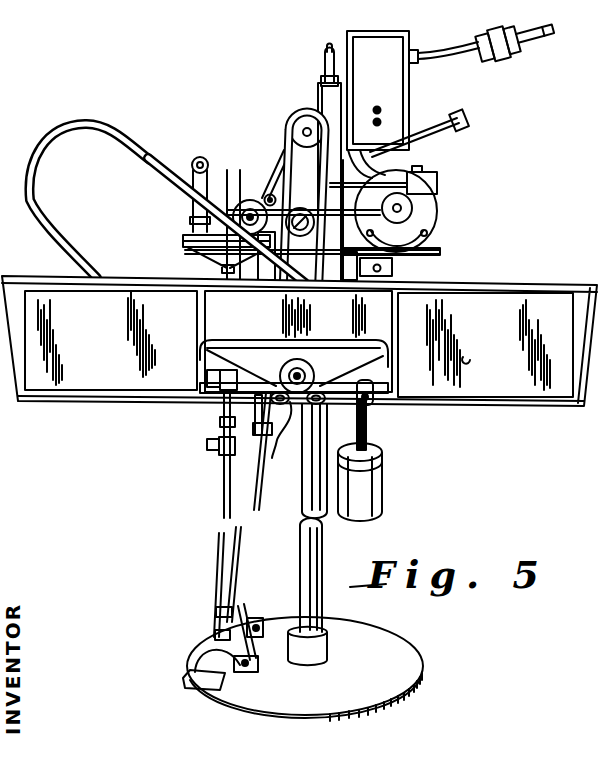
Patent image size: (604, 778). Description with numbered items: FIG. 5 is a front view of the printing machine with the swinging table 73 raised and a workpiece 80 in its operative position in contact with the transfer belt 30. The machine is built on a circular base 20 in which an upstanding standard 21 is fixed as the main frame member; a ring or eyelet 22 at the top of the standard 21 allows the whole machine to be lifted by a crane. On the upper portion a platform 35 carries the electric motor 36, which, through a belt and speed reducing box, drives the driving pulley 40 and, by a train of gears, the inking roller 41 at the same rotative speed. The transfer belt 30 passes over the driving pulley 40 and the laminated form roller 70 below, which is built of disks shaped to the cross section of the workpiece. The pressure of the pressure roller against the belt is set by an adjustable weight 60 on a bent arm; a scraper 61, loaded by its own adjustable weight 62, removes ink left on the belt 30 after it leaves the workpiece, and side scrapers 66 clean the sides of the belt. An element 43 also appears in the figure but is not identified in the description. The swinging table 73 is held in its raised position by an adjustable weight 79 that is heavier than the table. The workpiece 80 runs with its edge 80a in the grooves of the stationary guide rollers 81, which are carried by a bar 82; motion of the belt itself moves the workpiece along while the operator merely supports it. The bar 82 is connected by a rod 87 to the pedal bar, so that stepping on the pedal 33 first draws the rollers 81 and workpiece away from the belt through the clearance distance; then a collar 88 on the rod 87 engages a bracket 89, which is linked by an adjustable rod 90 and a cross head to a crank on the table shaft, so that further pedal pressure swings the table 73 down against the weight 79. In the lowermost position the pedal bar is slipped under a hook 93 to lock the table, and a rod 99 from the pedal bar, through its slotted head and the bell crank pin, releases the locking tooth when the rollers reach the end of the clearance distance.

The base 20 is at (393, 649).
The standard 21 is at (326, 545).
The ring or eyelet 22 is at (322, 46).
The transfer belt 30 is at (286, 140).
The pedal 33 is at (183, 680).
The platform 35 is at (398, 274).
The electric motor 36 is at (438, 212).
The driving pulley 40 is at (295, 132).
The inking roller 41 is at (240, 197).
The plate 43 is at (183, 242).
The adjustable weight 60 is at (440, 182).
The scraper 61 is at (345, 137).
The adjustable weight 62 is at (468, 118).
The side scrapers 66 is at (300, 122).
The form pulley or roller 70 is at (280, 365).
The swinging table 73 is at (500, 287).
The adjustable weight 79 is at (385, 478).
The workpiece 80 is at (80, 125).
The edge of the workpiece 80a is at (157, 126).
The guide rollers 81 is at (288, 447).
The bar 82 is at (375, 405).
The rod 87 is at (225, 495).
The collar 88 is at (219, 420).
The bracket 89 is at (215, 449).
The adjustable rod 90 is at (210, 441).
The hook 93 is at (255, 620).
The rod 99 is at (240, 537).